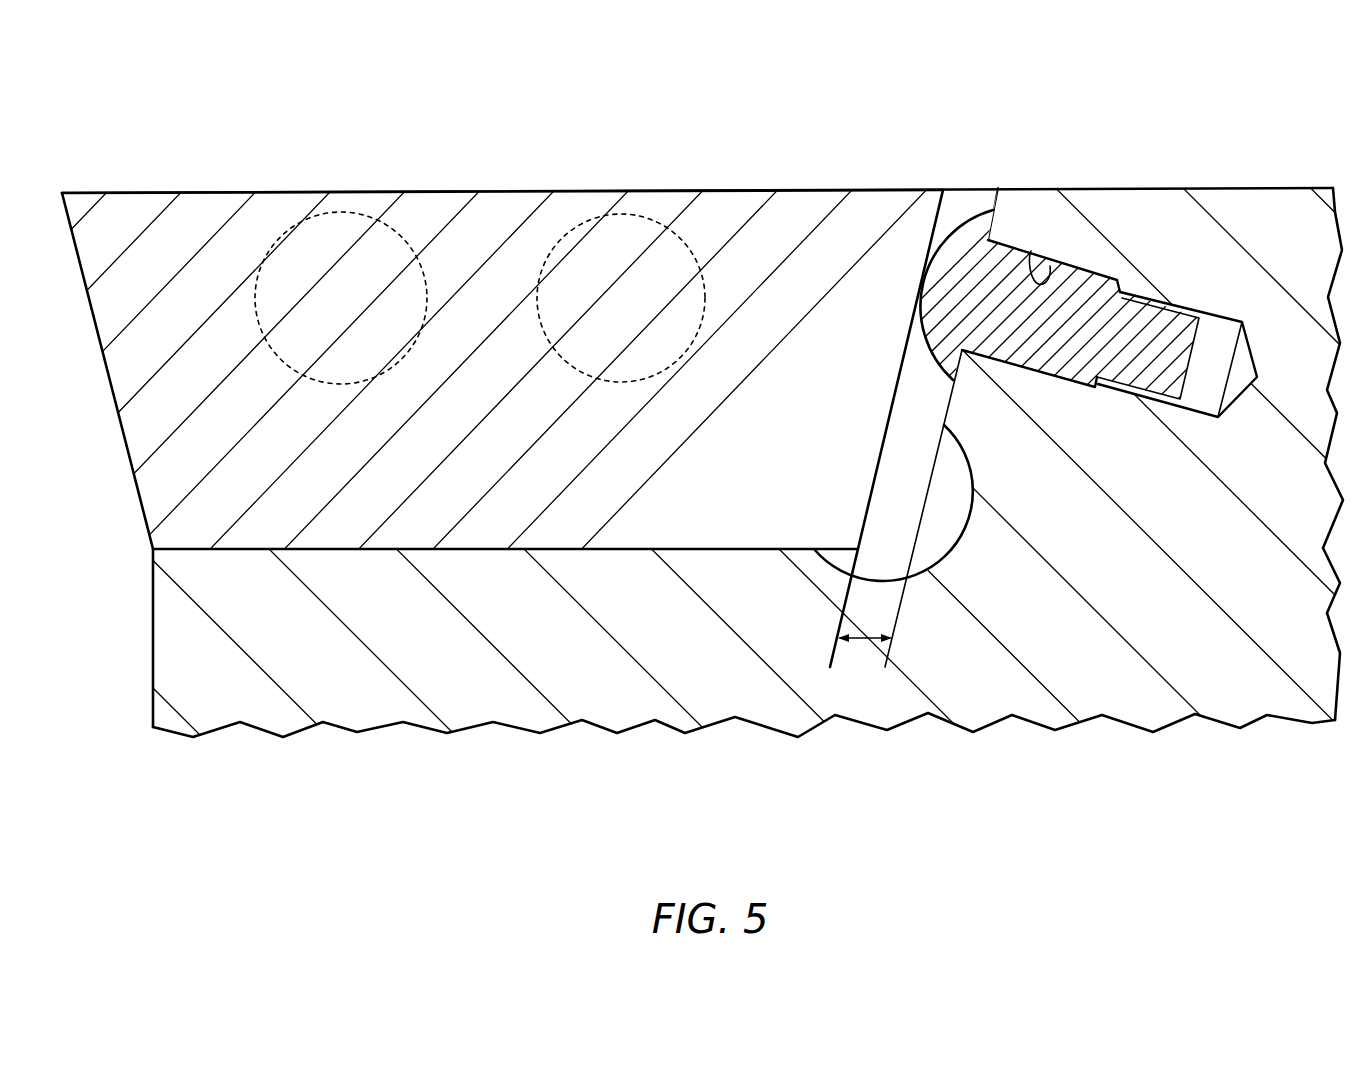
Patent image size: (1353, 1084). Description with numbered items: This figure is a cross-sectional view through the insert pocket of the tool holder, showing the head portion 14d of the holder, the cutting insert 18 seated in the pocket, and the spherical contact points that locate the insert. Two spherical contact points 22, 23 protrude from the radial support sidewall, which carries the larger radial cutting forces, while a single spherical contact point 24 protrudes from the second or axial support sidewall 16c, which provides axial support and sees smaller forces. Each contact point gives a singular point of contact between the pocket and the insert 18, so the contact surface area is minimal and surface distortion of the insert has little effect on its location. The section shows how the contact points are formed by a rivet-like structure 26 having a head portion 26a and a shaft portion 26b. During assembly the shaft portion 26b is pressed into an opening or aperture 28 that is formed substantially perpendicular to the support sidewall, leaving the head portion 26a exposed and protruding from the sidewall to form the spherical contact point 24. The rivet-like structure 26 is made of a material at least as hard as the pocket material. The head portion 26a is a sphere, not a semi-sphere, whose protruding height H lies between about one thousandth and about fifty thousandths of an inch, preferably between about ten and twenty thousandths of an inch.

The tool body 14d is at (1041, 661).
The second or axial support sidewall 16c is at (934, 404).
The insert 18 is at (345, 521).
The spherical contact point 22 is at (343, 287).
The spherical contact point 23 is at (608, 282).
The spherical contact point 24 is at (923, 272).
The rivet-like structure 26 is at (1071, 330).
The head portion 26a is at (971, 212).
The shaft portion 26b is at (1074, 356).
The opening or aperture 28 is at (1050, 266).
The height H is at (862, 640).